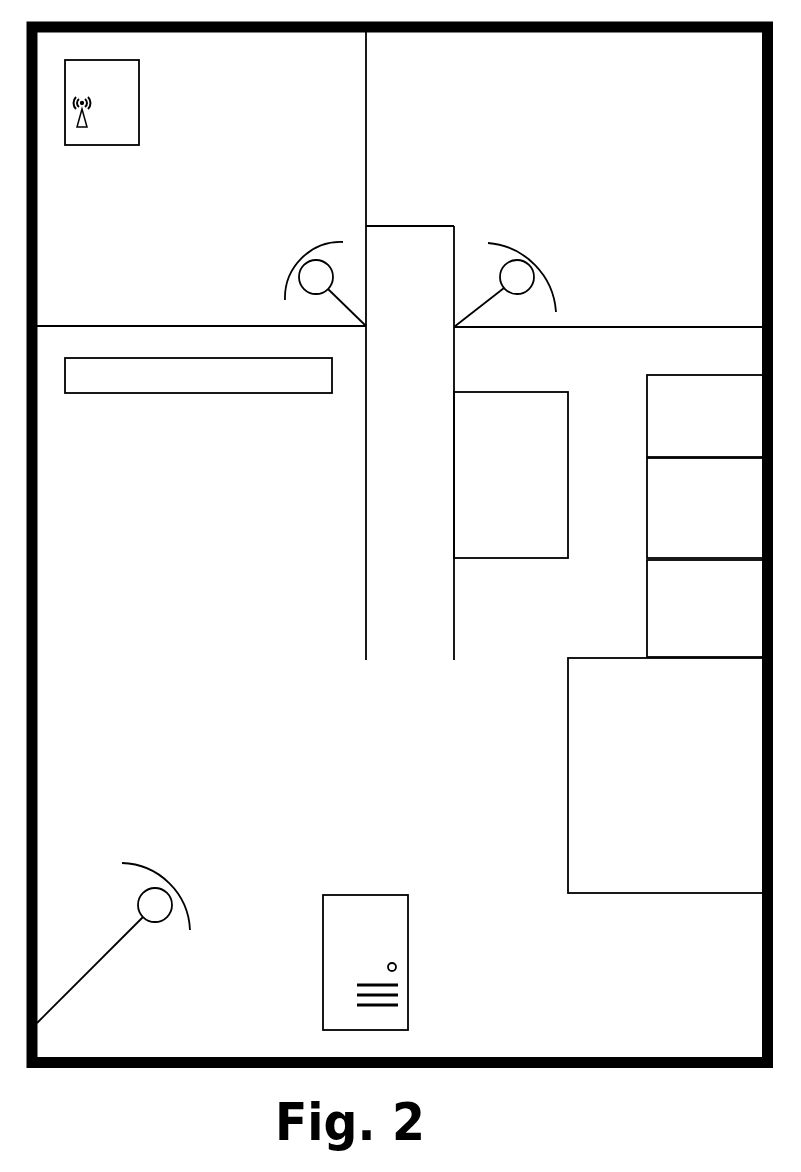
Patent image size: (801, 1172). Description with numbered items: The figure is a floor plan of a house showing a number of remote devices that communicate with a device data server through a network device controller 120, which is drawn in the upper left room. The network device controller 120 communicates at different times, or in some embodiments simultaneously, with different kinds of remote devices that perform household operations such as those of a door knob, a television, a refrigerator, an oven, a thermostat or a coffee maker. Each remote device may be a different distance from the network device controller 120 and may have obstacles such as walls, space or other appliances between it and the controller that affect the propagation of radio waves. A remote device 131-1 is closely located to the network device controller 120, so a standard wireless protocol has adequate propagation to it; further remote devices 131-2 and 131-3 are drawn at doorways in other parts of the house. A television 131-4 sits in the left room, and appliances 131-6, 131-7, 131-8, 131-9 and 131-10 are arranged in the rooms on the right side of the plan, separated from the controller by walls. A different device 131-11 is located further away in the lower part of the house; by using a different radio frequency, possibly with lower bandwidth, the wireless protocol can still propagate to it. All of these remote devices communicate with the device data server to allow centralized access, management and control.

The network device controller 120 is at (120, 90).
The remote device 131-1 is at (315, 277).
The remote device 131-2 is at (517, 277).
The remote device 131-3 is at (155, 905).
The remote device 131-4 is at (280, 386).
The remote device 131-6 is at (678, 453).
The remote device 131-7 is at (678, 546).
The remote device 131-8 is at (678, 646).
The remote device 131-9 is at (696, 800).
The remote device 131-10 is at (545, 526).
The remote device 131-11 is at (367, 928).